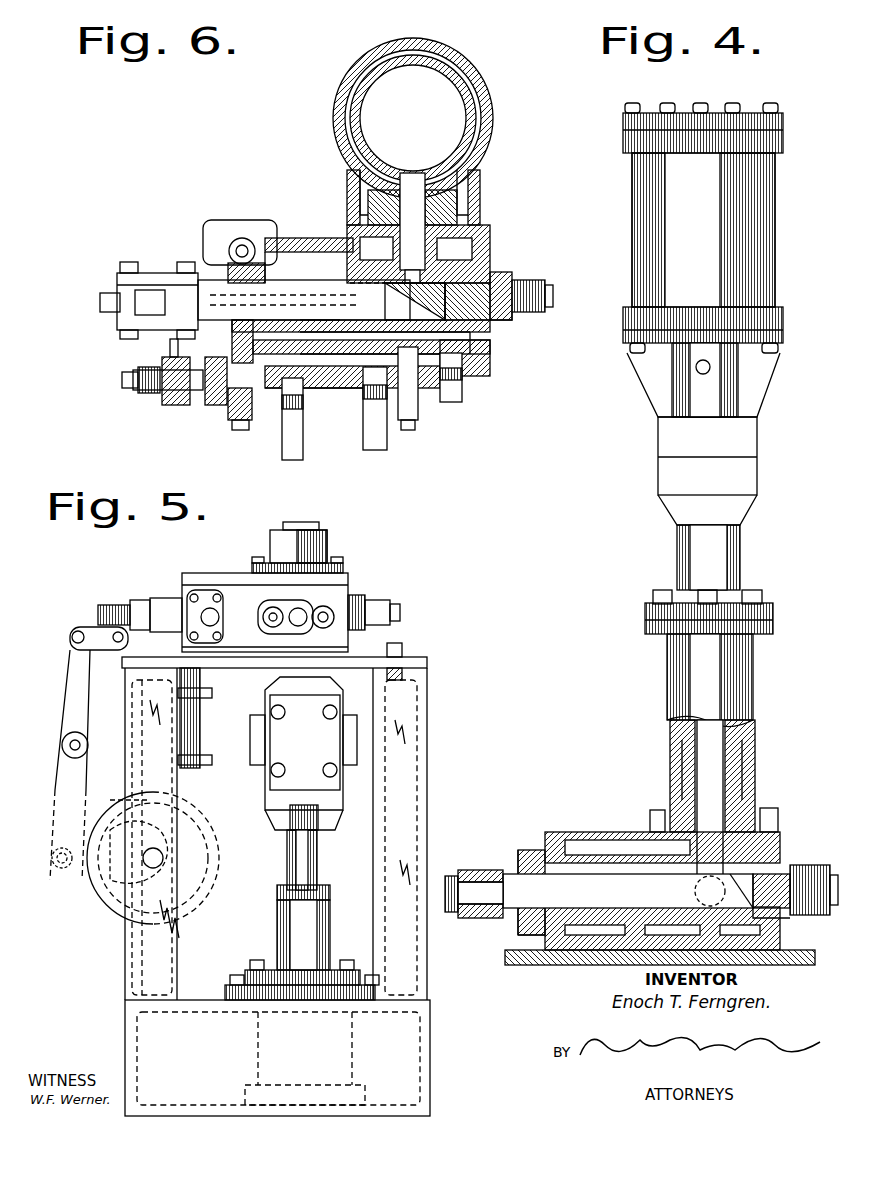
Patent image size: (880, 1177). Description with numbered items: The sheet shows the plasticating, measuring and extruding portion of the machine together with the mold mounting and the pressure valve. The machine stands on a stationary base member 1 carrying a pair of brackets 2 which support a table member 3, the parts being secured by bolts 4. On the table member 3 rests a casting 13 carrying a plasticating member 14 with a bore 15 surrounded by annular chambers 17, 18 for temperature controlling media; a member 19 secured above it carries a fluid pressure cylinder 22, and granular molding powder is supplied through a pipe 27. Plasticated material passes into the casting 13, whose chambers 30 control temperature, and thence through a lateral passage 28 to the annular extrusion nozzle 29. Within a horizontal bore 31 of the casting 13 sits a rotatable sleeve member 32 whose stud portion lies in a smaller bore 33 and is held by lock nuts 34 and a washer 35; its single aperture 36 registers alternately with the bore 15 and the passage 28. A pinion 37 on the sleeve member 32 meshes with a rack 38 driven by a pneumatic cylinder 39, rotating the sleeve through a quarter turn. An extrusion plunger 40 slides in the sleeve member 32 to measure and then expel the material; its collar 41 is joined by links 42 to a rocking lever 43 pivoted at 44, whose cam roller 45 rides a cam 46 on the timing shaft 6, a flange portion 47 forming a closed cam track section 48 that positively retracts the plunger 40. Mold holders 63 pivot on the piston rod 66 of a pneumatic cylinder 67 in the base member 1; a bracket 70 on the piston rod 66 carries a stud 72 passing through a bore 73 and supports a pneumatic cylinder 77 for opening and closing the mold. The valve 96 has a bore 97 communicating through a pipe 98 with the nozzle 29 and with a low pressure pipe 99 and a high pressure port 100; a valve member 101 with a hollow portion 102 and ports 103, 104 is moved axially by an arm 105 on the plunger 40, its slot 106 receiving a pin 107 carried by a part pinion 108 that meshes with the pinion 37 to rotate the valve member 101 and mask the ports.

In FIG. 5, the base member 1 is at (422, 1045).
In FIG. 5, the brackets 2 is at (430, 810).
In FIG. 4, the table member 3 is at (512, 965).
In FIG. 5, the table member 3 is at (420, 662).
In FIG. 4, the bolts 4 is at (714, 820).
In FIG. 5, the bolts 4 is at (400, 645).
In FIG. 5, the timing shaft 6 is at (165, 858).
In FIG. 6, the casting 13 is at (393, 282).
In FIG. 4, the casting 13 is at (649, 886).
In FIG. 5, the casting 13 is at (340, 585).
In FIG. 4, the plasticating member 14 is at (685, 670).
In FIG. 5, the plasticating member 14 is at (320, 548).
In FIG. 4, the bore or passage 15 is at (723, 775).
In FIG. 5, the bore or passage 15 is at (308, 524).
In FIG. 4, the annular chamber 17 is at (682, 730).
In FIG. 4, the annular chamber 18 is at (690, 770).
In FIG. 4, the member 19 is at (712, 546).
In FIG. 4, the fluid pressure cylinder 22 is at (665, 172).
In FIG. 4, the pipe 27 is at (703, 390).
In FIG. 6, the lateral passage 28 is at (418, 212).
In FIG. 6, the annular extrusion nozzle 29 is at (455, 64).
In FIG. 6, the chambers 30 is at (472, 350).
In FIG. 4, the chambers 30 is at (618, 845).
In FIG. 6, the cylindrical chamber or bore 31 is at (342, 246).
In FIG. 4, the cylindrical chamber or bore 31 is at (548, 967).
In FIG. 6, the rotatable sleeve member 32 is at (403, 286).
In FIG. 4, the rotatable sleeve member 32 is at (595, 878).
In FIG. 6, the smaller bore 33 is at (499, 273).
In FIG. 4, the smaller bore 33 is at (785, 870).
In FIG. 6, the lock nuts 34 is at (522, 283).
In FIG. 4, the lock nuts 34 is at (826, 875).
In FIG. 5, the lock nuts 34 is at (400, 613).
In FIG. 6, the washer 35 is at (504, 313).
In FIG. 4, the washer 35 is at (790, 910).
In FIG. 5, the washer 35 is at (366, 596).
In FIG. 6, the aperture 36 is at (458, 250).
In FIG. 4, the aperture 36 is at (772, 955).
In FIG. 6, the pinion 37 is at (215, 250).
In FIG. 4, the pinion 37 is at (530, 850).
In FIG. 6, the rack 38 is at (245, 250).
In FIG. 6, the pneumatic cylinder 39 is at (222, 222).
In FIG. 5, the pneumatic cylinder 39 is at (196, 712).
In FIG. 6, the extrusion plunger 40 is at (312, 283).
In FIG. 4, the extrusion plunger 40 is at (530, 896).
In FIG. 6, the collar 41 is at (215, 300).
In FIG. 4, the collar 41 is at (474, 870).
In FIG. 6, the links 42 is at (152, 273).
In FIG. 5, the links 42 is at (95, 620).
In FIG. 6, the rocking lever 43 is at (105, 305).
In FIG. 5, the rocking lever 43 is at (68, 670).
In FIG. 5, the pivot 44 is at (72, 715).
In FIG. 5, the cam roller 45 is at (64, 872).
In FIG. 5, the cam 46 is at (198, 852).
In FIG. 5, the outer flange portion 47 is at (62, 745).
In FIG. 5, the closed cam track section 48 is at (180, 798).
In FIG. 5, the mold holders 63 is at (268, 742).
In FIG. 5, the piston rod 66 is at (318, 850).
In FIG. 5, the pneumatic cylinder 67 is at (355, 1032).
In FIG. 5, the bracket 70 is at (345, 802).
In FIG. 5, the stud 72 is at (300, 852).
In FIG. 5, the bore or notched portion 73 is at (332, 892).
In FIG. 5, the pneumatic cylinder 77 is at (345, 740).
In FIG. 6, the valve 96 is at (462, 392).
In FIG. 6, the cylindrical bore 97 is at (420, 387).
In FIG. 6, the pipe 98 is at (388, 434).
In FIG. 5, the pipe 98 is at (280, 613).
In FIG. 6, the low pressure pipe 99 is at (258, 430).
In FIG. 5, the low pressure pipe 99 is at (214, 614).
In FIG. 6, the high pressure port 100 is at (372, 345).
In FIG. 6, the valve member 101 is at (165, 388).
In FIG. 5, the valve member 101 is at (143, 600).
In FIG. 6, the hollow portion 102 is at (346, 400).
In FIG. 6, the port 103 is at (294, 440).
In FIG. 6, the port 104 is at (305, 340).
In FIG. 6, the arm 105 is at (122, 372).
In FIG. 6, the longitudinal slot 106 is at (240, 416).
In FIG. 6, the pin 107 is at (178, 408).
In FIG. 6, the part pinion 108 is at (150, 378).
In FIG. 5, the part pinion 108 is at (182, 590).